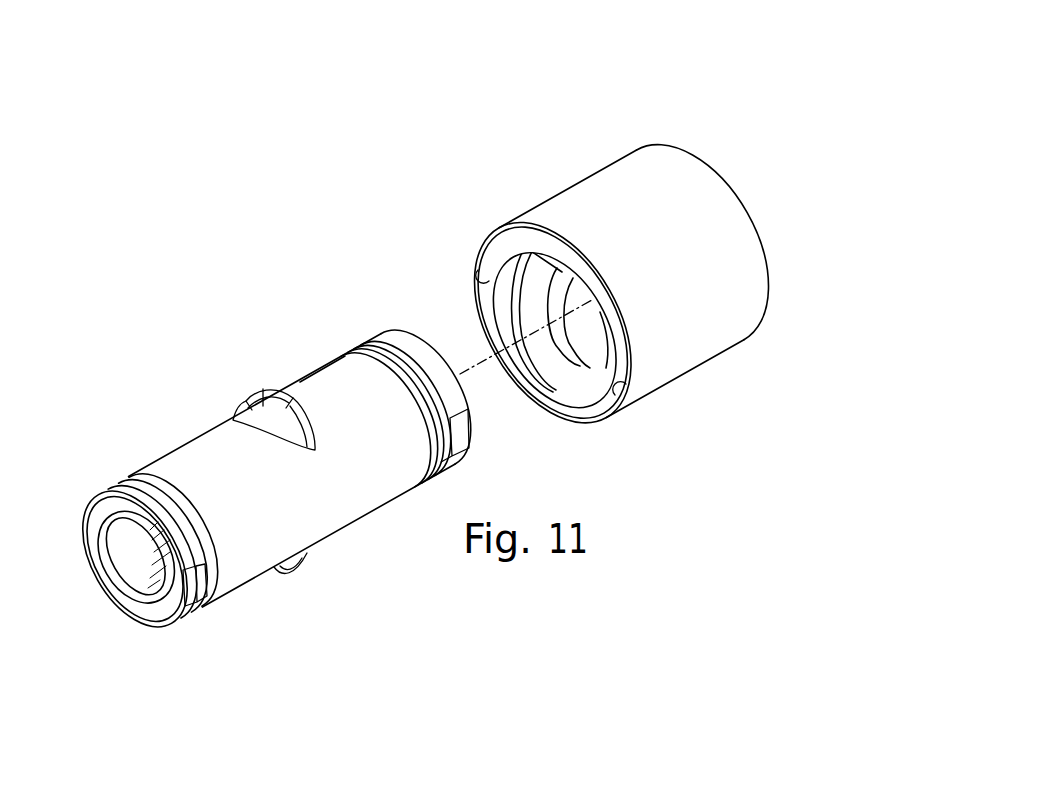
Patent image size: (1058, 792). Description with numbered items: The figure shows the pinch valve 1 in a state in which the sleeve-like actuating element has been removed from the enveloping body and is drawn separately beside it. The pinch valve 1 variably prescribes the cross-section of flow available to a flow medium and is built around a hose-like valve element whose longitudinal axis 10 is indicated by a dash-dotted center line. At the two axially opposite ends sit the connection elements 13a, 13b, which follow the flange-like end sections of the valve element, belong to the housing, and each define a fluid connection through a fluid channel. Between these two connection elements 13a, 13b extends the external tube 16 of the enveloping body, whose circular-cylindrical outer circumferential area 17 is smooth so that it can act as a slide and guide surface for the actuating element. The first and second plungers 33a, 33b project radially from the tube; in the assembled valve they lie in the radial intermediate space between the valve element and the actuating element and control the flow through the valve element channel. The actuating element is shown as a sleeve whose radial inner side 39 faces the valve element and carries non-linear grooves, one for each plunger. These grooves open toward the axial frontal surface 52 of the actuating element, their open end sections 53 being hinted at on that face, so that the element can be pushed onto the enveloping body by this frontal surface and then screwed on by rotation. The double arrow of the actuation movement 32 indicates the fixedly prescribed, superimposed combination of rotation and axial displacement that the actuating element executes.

The pinch valve 1 is at (716, 130).
The longitudinal axis 10 is at (470, 344).
The connection element 13a is at (123, 503).
The connection element 13b is at (411, 347).
The external tube 16 is at (197, 460).
The outer circumferential area 17 is at (321, 370).
The actuation movement 32 is at (730, 314).
The first plunger 33a is at (268, 402).
The second plunger 33b is at (308, 568).
The radial inner side 39 is at (586, 380).
The axial frontal surface 52 is at (540, 247).
The open end sections of the grooves 53 is at (480, 268).